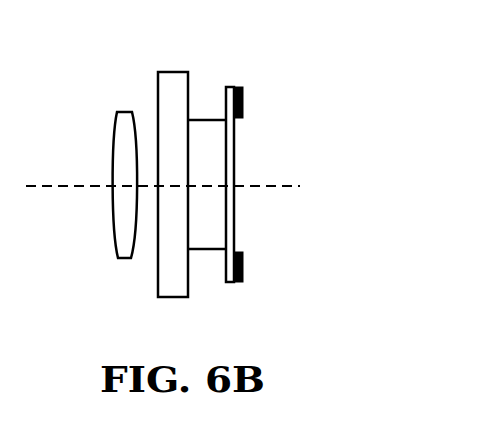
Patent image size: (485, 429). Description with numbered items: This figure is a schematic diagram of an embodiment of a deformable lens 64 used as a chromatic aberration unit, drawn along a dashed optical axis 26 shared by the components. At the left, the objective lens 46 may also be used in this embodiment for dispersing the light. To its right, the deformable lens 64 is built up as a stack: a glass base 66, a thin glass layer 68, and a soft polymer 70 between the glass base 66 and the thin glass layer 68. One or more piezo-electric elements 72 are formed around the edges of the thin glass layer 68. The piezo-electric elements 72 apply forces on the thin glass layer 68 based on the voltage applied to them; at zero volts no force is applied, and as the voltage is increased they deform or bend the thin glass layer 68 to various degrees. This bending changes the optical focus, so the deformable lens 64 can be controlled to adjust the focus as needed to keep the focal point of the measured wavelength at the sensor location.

The optical axis 26 is at (280, 186).
The objective lens 46 is at (112, 145).
The deformable lens 64 is at (282, 108).
The glass base 66 is at (172, 72).
The thin glass layer 68 is at (235, 203).
The soft polymer 70 is at (212, 120).
The piezo-electric elements 72 is at (243, 97).